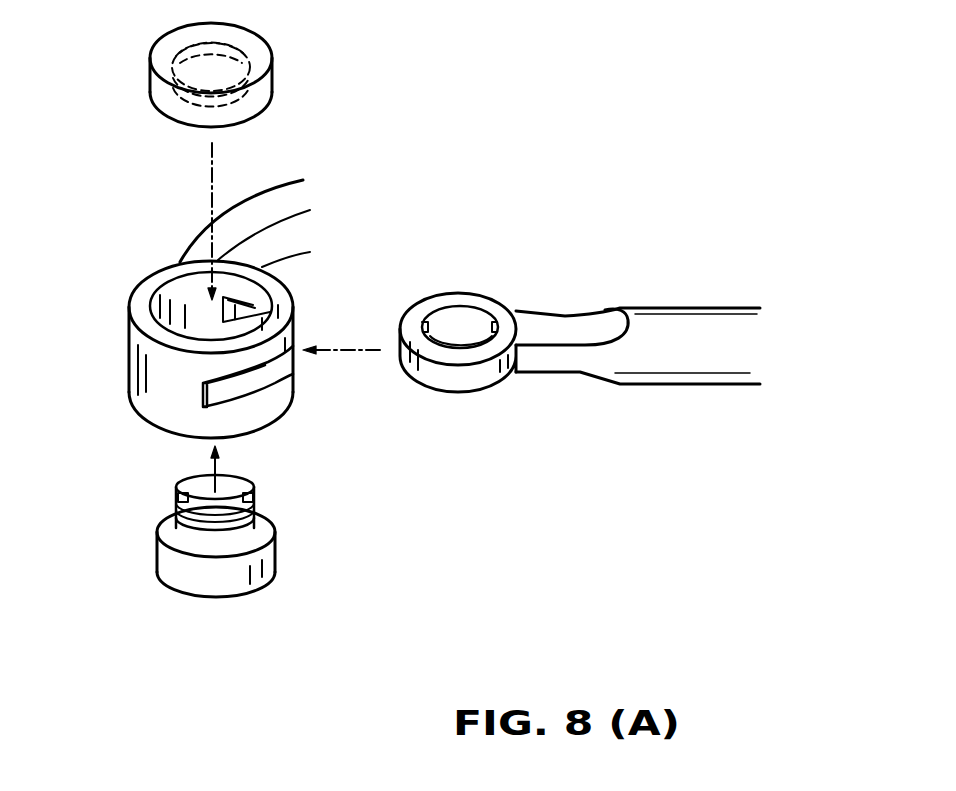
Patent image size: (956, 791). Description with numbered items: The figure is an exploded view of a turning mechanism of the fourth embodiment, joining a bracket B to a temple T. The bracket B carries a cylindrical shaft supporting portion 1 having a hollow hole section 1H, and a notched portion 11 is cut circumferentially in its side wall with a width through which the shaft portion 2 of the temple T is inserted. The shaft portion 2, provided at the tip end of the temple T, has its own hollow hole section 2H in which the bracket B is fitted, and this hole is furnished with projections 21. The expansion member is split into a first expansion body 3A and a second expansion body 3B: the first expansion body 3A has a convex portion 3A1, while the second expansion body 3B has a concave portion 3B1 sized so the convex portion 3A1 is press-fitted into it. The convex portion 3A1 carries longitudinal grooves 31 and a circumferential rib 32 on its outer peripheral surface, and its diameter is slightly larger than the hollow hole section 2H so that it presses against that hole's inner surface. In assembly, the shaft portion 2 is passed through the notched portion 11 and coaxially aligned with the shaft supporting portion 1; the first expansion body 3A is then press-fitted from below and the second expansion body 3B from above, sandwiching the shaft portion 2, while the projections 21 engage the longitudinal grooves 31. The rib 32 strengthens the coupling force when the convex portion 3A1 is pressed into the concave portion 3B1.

The shaft supporting portion 1 is at (140, 297).
The hollow hole section 1H is at (176, 300).
The notched portion 11 is at (262, 385).
The shaft portion 2 is at (490, 293).
The hollow hole section 2H is at (452, 317).
The projections 21 is at (432, 325).
The first expansion body 3A is at (170, 578).
The convex portion 3A1 is at (247, 540).
The longitudinal grooves 31 is at (255, 498).
The rib 32 is at (186, 535).
The second expansion body 3B is at (262, 48).
The concave portion 3B1 is at (168, 124).
The bracket B is at (267, 197).
The temple T is at (683, 318).